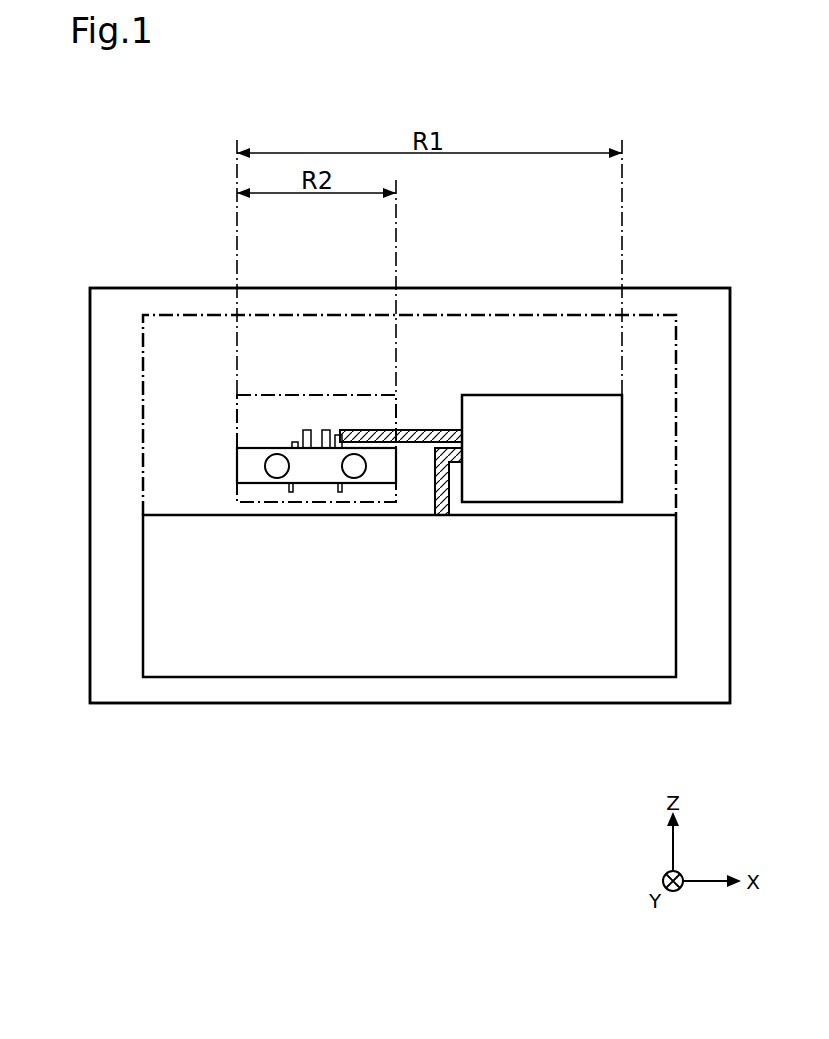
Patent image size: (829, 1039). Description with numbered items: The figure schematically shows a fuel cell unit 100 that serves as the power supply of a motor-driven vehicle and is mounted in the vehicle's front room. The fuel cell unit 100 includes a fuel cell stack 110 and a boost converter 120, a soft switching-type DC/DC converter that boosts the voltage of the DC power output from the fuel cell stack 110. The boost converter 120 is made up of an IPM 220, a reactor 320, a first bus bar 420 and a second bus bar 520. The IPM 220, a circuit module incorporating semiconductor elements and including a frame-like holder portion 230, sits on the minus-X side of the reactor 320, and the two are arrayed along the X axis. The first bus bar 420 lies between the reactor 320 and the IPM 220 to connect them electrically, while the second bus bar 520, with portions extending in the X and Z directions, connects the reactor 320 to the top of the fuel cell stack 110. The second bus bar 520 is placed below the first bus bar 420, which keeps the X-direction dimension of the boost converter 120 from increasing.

The fuel cell unit 100 is at (110, 183).
The fuel cell stack 110 is at (410, 677).
The boost converter 120 is at (143, 367).
The IPM 220 is at (319, 395).
The holder portion 230 is at (237, 463).
The reactor 320 is at (545, 395).
The first bus bar 420 is at (442, 430).
The second bus bar 520 is at (452, 477).